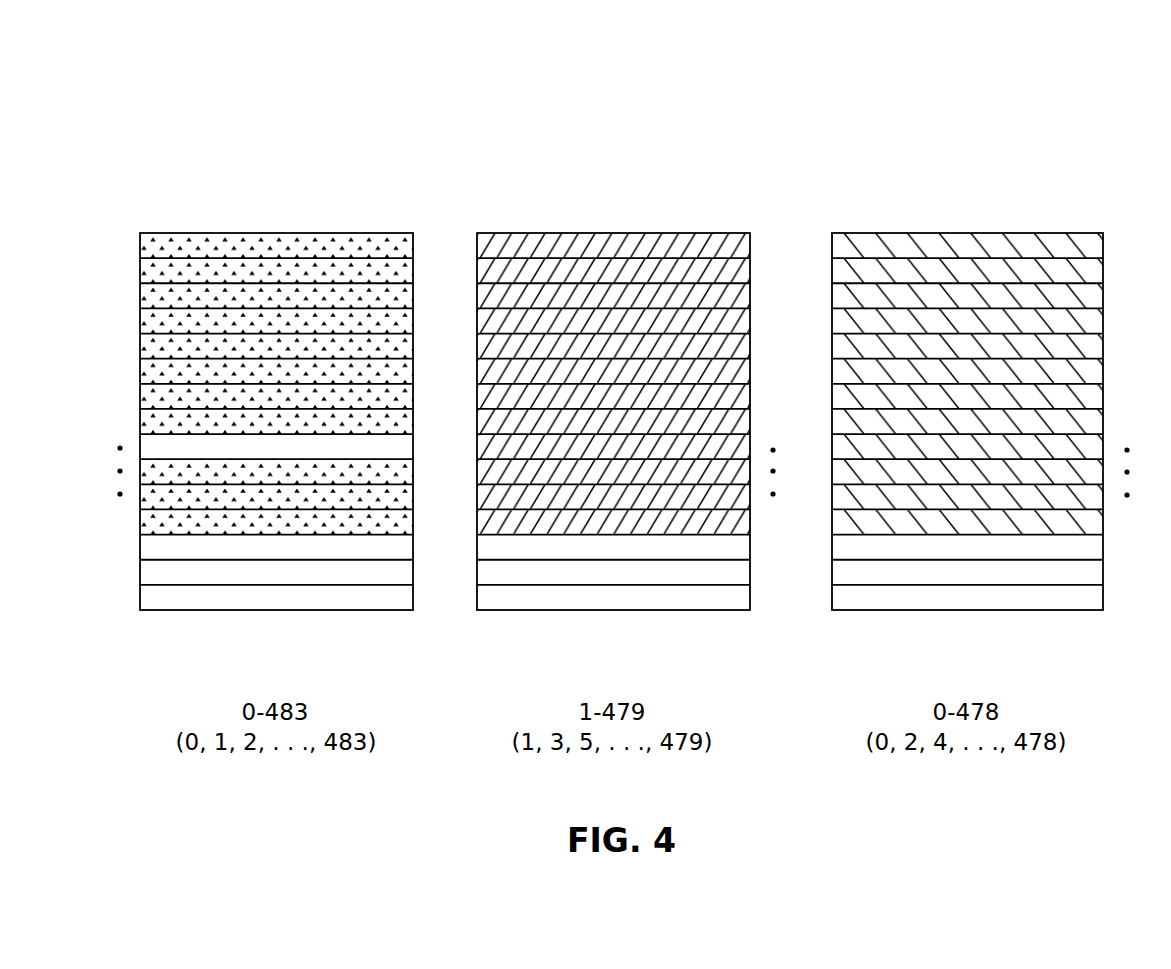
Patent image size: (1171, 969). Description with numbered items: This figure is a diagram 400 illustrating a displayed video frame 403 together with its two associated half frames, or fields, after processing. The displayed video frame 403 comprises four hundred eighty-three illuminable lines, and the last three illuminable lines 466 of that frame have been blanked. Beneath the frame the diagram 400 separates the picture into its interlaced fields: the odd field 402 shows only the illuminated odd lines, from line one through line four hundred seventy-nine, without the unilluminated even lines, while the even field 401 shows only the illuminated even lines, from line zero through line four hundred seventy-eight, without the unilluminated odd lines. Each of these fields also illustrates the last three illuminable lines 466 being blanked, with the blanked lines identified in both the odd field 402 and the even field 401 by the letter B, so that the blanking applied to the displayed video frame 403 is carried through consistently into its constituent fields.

The diagram 400 is at (866, 80).
The even field 401 is at (965, 233).
The odd field 402 is at (613, 233).
The displayed video frame 403 is at (275, 233).
The last three illuminable lines 466 is at (268, 545).